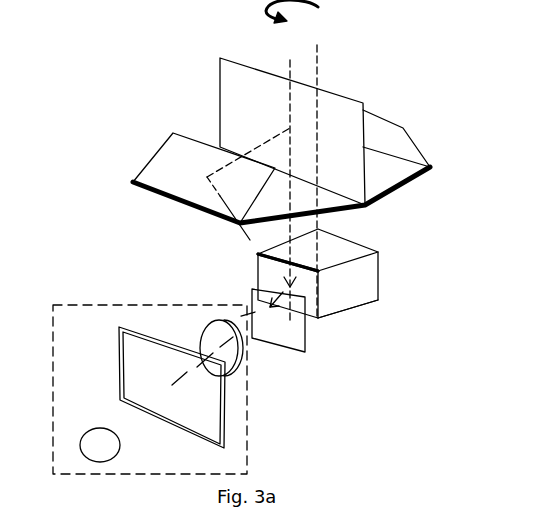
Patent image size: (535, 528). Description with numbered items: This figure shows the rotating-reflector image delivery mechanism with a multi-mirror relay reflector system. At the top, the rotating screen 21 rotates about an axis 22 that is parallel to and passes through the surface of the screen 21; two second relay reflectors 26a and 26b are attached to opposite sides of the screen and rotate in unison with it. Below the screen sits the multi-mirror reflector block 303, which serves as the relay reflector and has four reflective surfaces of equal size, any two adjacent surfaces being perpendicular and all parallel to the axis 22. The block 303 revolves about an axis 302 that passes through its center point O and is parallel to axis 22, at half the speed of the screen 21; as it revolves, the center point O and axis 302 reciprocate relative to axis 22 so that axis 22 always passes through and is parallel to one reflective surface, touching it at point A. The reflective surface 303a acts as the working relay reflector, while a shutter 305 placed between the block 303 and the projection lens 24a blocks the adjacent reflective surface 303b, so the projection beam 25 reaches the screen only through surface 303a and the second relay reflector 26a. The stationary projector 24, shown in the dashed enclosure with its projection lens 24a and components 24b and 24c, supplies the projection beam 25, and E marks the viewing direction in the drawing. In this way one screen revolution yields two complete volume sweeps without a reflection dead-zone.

The rotating screen 21 is at (348, 112).
The axis 22 is at (288, 71).
The second relay reflector 26a is at (162, 168).
The second relay reflector 26b is at (423, 150).
The axis 302 is at (318, 62).
The multi-mirror reflector block 303 is at (380, 253).
The reflective surface 303a is at (258, 272).
The reflective surface 303b is at (357, 293).
The shutter 305 is at (310, 340).
The projection beam 25 is at (247, 323).
The stationary projector 24 is at (150, 389).
The projection lens 24a is at (208, 325).
The screen 24b is at (127, 345).
The light source 24c is at (98, 432).
The center point O is at (317, 246).
The point A is at (317, 268).
The eye position E is at (258, 256).